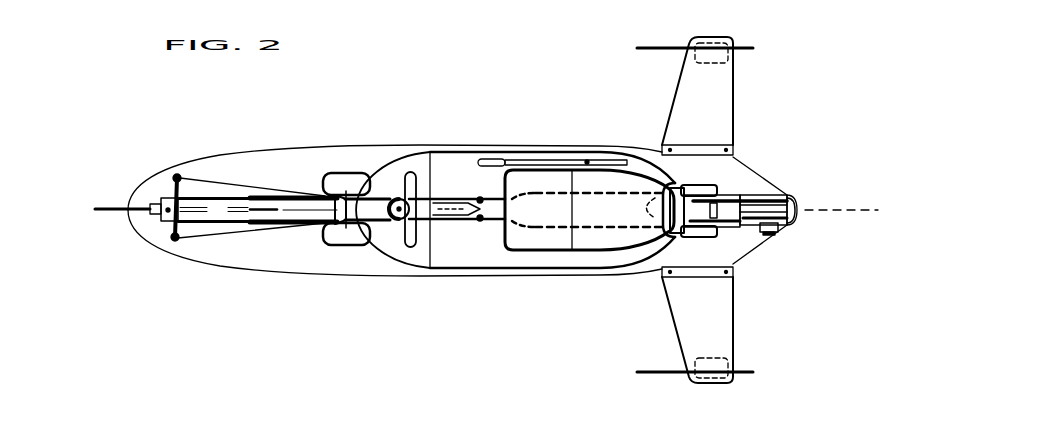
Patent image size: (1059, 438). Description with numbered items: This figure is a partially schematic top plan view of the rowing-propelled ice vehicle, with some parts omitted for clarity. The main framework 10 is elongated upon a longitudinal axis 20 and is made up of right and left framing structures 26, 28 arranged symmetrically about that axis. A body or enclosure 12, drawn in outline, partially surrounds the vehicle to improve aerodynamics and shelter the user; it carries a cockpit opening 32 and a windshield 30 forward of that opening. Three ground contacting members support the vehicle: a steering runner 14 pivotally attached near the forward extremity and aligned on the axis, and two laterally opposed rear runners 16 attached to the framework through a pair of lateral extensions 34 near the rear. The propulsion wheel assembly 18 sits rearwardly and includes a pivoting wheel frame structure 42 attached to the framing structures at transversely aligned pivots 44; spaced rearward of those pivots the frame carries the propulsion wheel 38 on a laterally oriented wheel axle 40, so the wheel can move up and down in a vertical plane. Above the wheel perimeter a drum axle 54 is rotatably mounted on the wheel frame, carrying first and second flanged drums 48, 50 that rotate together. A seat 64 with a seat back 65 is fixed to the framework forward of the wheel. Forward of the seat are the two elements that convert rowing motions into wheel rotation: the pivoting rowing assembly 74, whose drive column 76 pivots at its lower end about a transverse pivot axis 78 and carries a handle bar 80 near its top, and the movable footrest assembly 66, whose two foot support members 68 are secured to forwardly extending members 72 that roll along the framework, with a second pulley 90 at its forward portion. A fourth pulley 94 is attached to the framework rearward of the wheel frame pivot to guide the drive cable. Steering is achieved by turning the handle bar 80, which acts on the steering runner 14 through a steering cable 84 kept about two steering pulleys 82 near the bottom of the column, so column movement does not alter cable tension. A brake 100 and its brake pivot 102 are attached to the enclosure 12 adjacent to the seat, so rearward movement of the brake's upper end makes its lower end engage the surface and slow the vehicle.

The main framework 10 is at (156, 217).
The body or enclosure 12 is at (206, 224).
The steering runner 14 is at (128, 207).
The rear runners 16 is at (663, 49).
The propulsion wheel assembly 18 is at (862, 115).
The longitudinal axis 20 is at (828, 210).
The right framing structure 26 is at (187, 182).
The left framing structure 28 is at (192, 240).
The windshield 30 is at (428, 262).
The cockpit opening 32 is at (463, 270).
The lateral extensions 34 is at (718, 100).
The propulsion wheel 38 is at (770, 205).
The wheel axle 40 is at (712, 238).
The wheel frame structure 42 is at (700, 186).
The pivots 44 is at (676, 180).
The first flanged drum 48 is at (742, 230).
The second flanged drum 50 is at (722, 198).
The drum axle 54 is at (717, 193).
The seat 64 is at (553, 242).
The seat back 65 is at (613, 240).
The footrest assembly 66 is at (287, 243).
The foot support members 68 is at (360, 242).
The forwardly extending members 72 is at (295, 197).
The rowing assembly 74 is at (388, 238).
The drive column 76 is at (442, 204).
The transverse pivot axis 78 is at (478, 220).
The handle bar 80 is at (407, 247).
The steering pulleys 82 is at (483, 210).
The steering cable 84 is at (268, 224).
The second pulley 90 is at (223, 207).
The fourth pulley 94 is at (785, 228).
The brake 100 is at (495, 160).
The brake pivot 102 is at (588, 160).